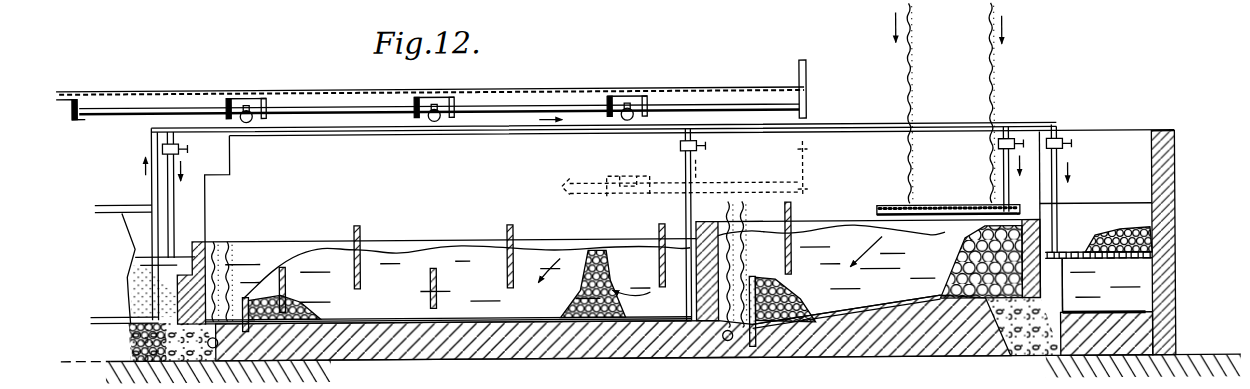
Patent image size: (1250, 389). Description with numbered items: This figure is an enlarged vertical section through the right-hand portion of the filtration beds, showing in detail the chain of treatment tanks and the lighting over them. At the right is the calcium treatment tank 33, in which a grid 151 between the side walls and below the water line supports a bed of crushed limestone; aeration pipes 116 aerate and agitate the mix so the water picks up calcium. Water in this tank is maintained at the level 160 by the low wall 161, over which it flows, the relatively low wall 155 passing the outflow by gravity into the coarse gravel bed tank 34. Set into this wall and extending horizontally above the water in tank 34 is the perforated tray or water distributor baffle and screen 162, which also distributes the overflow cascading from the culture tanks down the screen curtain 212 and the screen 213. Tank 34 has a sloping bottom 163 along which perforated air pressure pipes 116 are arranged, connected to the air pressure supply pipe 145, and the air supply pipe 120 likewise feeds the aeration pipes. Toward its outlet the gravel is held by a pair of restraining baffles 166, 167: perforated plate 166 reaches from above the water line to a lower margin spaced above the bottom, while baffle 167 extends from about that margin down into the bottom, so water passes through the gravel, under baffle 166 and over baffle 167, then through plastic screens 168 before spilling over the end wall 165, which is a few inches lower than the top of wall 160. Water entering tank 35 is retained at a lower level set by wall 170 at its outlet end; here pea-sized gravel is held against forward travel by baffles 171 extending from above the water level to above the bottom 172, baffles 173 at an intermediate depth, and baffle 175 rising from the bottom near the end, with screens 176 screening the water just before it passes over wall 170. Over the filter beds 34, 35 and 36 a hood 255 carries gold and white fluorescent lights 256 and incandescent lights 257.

The calcium treatment tank 33 is at (1132, 278).
The coarse gravel bed tank 34 is at (879, 259).
The tank 35 is at (478, 233).
The filter bed 36 is at (128, 247).
The aeration pipes 116 is at (452, 317).
The supply pipe 120 is at (140, 202).
The air pressure supply pipe 145 is at (882, 126).
The grid 151 is at (1103, 285).
The low level wall 155 is at (1040, 210).
The water level 160 is at (1020, 208).
The low wall 161 is at (1035, 233).
The water distributor baffle and screen 162 is at (922, 207).
The sloping bottom 163 is at (880, 310).
The wall 165 is at (708, 222).
The restraining baffle 166 is at (793, 214).
The restraining baffle 167 is at (775, 290).
The screens 168 is at (730, 213).
The wall 170 is at (205, 240).
The baffles 171 is at (362, 227).
The bottom 172 is at (412, 317).
The baffles 173 is at (590, 283).
The baffle 175 is at (250, 292).
The screens 176 is at (229, 243).
The screen curtain 212 is at (996, 84).
The screen 213 is at (912, 82).
The hood 255 is at (668, 82).
The fluorescent lights 256 is at (332, 107).
The incandescent lights 257 is at (253, 107).